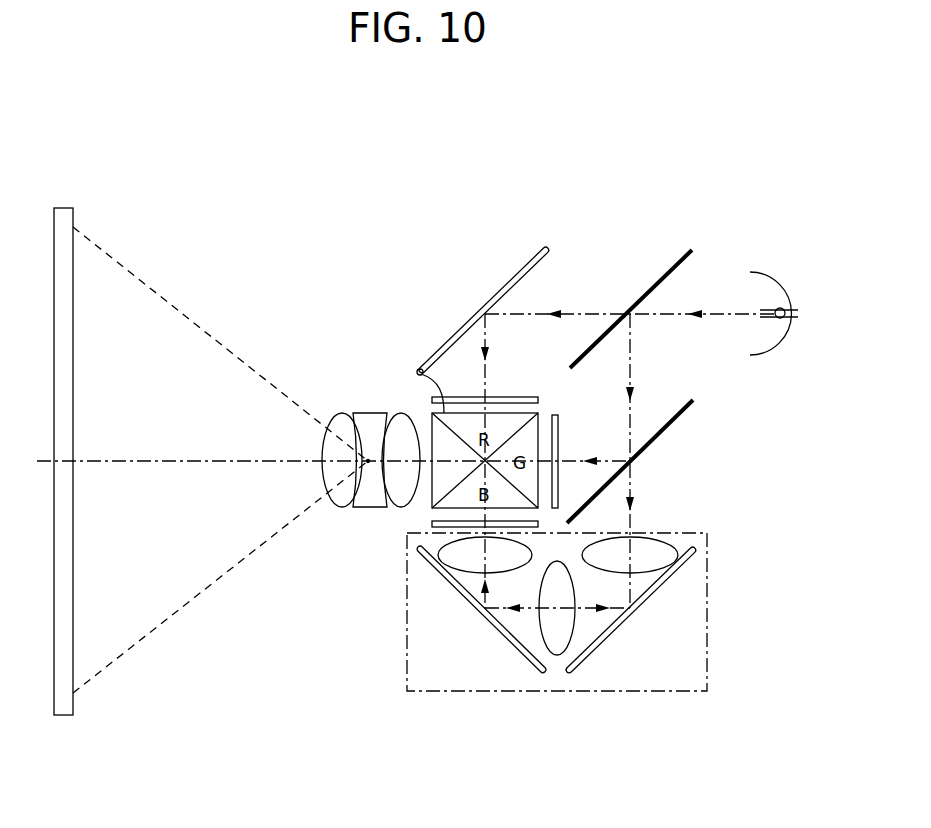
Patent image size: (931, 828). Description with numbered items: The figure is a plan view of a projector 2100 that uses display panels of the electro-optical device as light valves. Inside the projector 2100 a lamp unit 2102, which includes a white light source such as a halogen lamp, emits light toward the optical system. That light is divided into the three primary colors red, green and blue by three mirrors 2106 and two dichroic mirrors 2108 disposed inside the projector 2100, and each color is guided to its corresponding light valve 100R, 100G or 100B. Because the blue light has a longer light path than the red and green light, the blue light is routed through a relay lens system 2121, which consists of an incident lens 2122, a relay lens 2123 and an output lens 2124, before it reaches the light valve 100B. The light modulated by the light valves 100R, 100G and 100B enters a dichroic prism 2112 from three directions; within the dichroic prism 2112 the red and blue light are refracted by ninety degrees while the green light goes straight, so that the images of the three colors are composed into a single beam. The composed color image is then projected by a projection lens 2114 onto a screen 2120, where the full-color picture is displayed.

The projector 2100 is at (666, 172).
The lamp unit 2102 is at (781, 307).
The mirror 2106 is at (518, 278).
The dichroic mirror 2108 is at (663, 277).
The dichroic prism 2112 is at (418, 371).
The projection lens 2114 is at (417, 403).
The screen 2120 is at (73, 705).
The relay lens system 2121 is at (707, 593).
The incident lens 2122 is at (650, 567).
The relay lens 2123 is at (568, 635).
The output lens 2124 is at (462, 562).
The light valve 100R is at (467, 397).
The light valve 100G is at (558, 440).
The light valve 100B is at (432, 525).